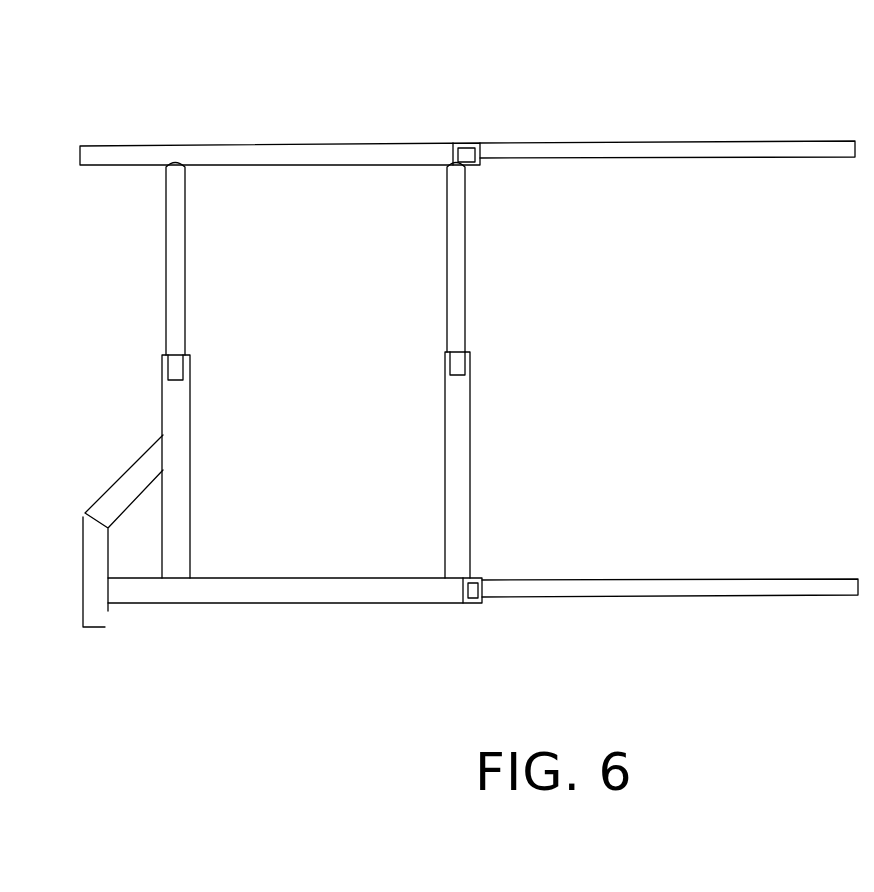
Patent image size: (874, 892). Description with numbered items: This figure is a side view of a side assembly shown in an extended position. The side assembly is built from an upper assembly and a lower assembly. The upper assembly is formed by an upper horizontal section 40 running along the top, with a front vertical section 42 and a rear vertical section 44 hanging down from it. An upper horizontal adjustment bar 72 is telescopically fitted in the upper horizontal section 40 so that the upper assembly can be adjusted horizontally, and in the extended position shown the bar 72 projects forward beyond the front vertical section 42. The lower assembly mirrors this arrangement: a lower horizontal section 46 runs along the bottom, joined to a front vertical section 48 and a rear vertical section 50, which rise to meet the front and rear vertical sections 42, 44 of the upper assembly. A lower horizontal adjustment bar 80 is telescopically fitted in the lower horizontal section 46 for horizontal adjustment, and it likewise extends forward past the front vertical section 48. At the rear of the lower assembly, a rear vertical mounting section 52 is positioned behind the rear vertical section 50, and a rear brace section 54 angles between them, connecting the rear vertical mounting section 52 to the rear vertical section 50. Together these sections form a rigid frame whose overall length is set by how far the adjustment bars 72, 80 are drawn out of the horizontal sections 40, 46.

The upper horizontal section 40 is at (310, 143).
The upper horizontal adjustment bar 72 is at (674, 151).
The rear vertical section 44 is at (174, 272).
The front vertical section 42 is at (460, 270).
The rear vertical section 50 is at (177, 492).
The front vertical section 48 is at (466, 478).
The lower horizontal section 46 is at (307, 590).
The lower horizontal adjustment bar 80 is at (622, 587).
The rear brace section 54 is at (127, 472).
The rear vertical mounting section 52 is at (107, 612).